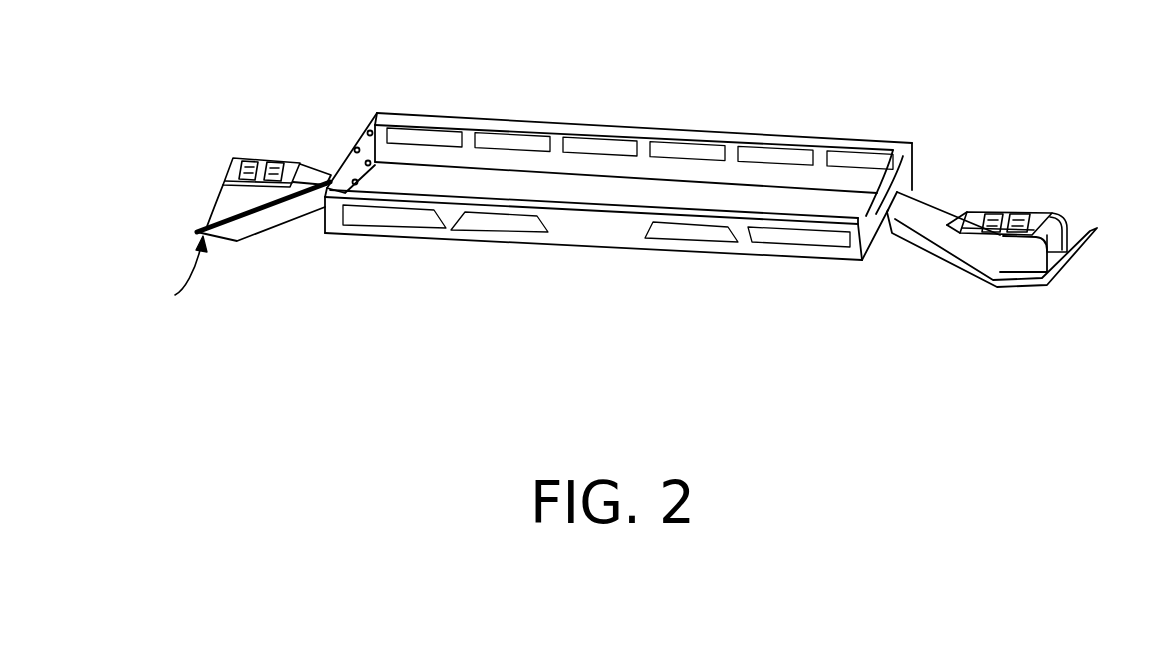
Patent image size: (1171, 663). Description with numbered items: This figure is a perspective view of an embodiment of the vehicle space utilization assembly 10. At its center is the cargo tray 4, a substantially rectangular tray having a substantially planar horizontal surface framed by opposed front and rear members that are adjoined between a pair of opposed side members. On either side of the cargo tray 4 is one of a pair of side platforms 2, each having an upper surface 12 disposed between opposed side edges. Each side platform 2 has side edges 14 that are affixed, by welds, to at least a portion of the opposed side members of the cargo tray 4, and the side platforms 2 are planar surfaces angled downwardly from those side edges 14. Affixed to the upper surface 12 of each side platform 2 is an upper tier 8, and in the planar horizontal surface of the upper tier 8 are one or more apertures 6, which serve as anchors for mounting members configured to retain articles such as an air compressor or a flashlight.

The space utilization assembly 10 is at (701, 86).
The cargo tray 4 is at (545, 190).
The side edges 14 is at (341, 168).
The side platforms 2 is at (198, 229).
The apertures 6 is at (286, 160).
The upper tier 8 is at (249, 187).
The upper surface 12 is at (176, 273).